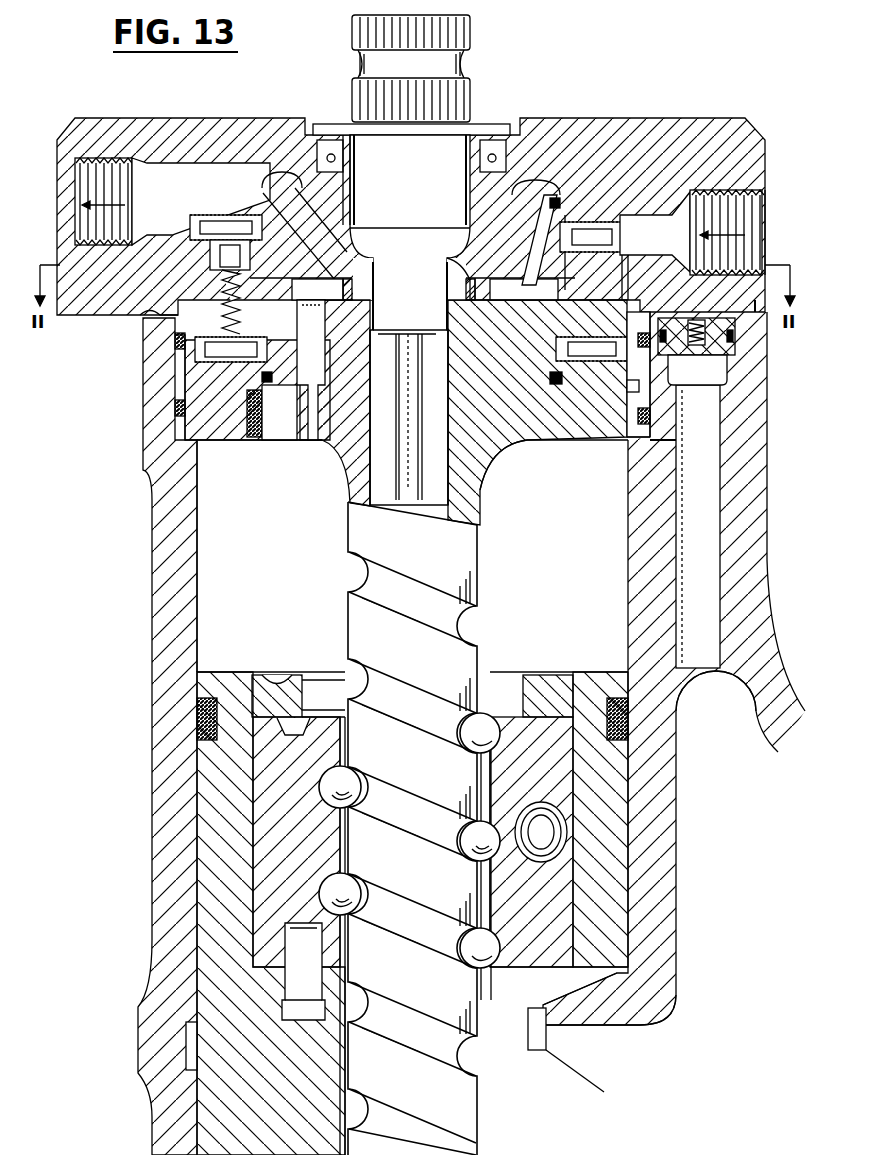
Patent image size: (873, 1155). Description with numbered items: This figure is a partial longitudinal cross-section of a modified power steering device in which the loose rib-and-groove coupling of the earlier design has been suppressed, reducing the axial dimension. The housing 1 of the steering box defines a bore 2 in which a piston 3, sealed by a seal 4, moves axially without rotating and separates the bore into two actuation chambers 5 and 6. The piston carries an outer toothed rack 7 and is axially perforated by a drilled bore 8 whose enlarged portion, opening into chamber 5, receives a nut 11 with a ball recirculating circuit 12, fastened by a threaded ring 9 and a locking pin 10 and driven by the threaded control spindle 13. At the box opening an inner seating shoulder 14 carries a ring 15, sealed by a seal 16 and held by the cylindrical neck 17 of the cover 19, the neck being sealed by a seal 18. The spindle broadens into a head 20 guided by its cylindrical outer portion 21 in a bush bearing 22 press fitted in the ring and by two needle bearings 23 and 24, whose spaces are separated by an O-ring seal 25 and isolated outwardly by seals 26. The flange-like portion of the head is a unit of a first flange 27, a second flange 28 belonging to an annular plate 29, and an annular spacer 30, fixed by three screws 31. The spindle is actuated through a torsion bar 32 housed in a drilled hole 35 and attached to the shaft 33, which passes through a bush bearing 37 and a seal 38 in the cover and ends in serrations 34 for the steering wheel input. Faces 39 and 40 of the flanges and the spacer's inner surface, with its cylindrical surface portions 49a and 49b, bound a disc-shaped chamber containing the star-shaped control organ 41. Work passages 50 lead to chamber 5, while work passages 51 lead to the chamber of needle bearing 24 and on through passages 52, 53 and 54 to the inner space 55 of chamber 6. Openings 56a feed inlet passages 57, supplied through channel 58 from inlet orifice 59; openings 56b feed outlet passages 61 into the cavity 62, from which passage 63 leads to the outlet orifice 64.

The housing 1 is at (162, 600).
The bore 2 is at (628, 585).
The piston 3 is at (185, 840).
The seal 4 is at (632, 724).
The actuation chamber 5 is at (234, 556).
The actuation chamber 6 is at (622, 1000).
The toothed rack 7 is at (562, 1076).
The drilled bore 8 is at (352, 1066).
The threaded ring 9 is at (296, 674).
The locking pin 10 is at (303, 971).
The nut 11 is at (270, 912).
The ball recirculating circuit 12 is at (552, 832).
The threaded control spindle 13 is at (412, 828).
The inner seating shoulder 14 is at (662, 444).
The ring 15 is at (176, 420).
The seal 16 is at (652, 418).
The cylindrical neck 17 is at (190, 362).
The seal 18 is at (176, 340).
The cover 19 is at (292, 135).
The head 20 is at (546, 450).
The cylindrical outer portion 21 is at (250, 440).
The bush bearing 22 is at (612, 405).
The needle bearing 23 is at (215, 240).
The needle bearing 24 is at (612, 364).
The O-ring seal 25 is at (160, 318).
The seals 26 is at (602, 228).
The first flange 27 is at (758, 300).
The second flange 28 is at (694, 193).
The annular plate 29 is at (575, 205).
The annular spacer 30 is at (624, 247).
The screws 31 is at (245, 222).
The torsion bar 32 is at (406, 432).
The shaft 33 is at (410, 320).
The serrations 34 is at (458, 32).
The drilled hole 35 is at (486, 484).
The bush bearing 37 is at (352, 186).
The seal 38 is at (488, 150).
The surface 39 is at (375, 306).
The surface 40 is at (450, 300).
The star-shaped control organ 41 is at (366, 284).
The cylindrical surface portions 49a is at (420, 372).
The cylindrical surface portions 49b is at (448, 265).
The work passages 50 is at (312, 442).
The work passages 51 is at (534, 444).
The passage 52 is at (650, 400).
The passage 53 is at (660, 365).
The passage 54 is at (698, 526).
The steering box inner space 55 is at (716, 721).
The openings 56a is at (301, 289).
The openings 56b is at (520, 289).
The inlet passage 57 is at (352, 262).
The channel 58 is at (655, 232).
The inlet orifice 59 is at (762, 197).
The outlet passages 61 is at (524, 270).
The internal cavity 62 is at (562, 200).
The passage 63 is at (201, 201).
The outlet orifice 64 is at (122, 160).